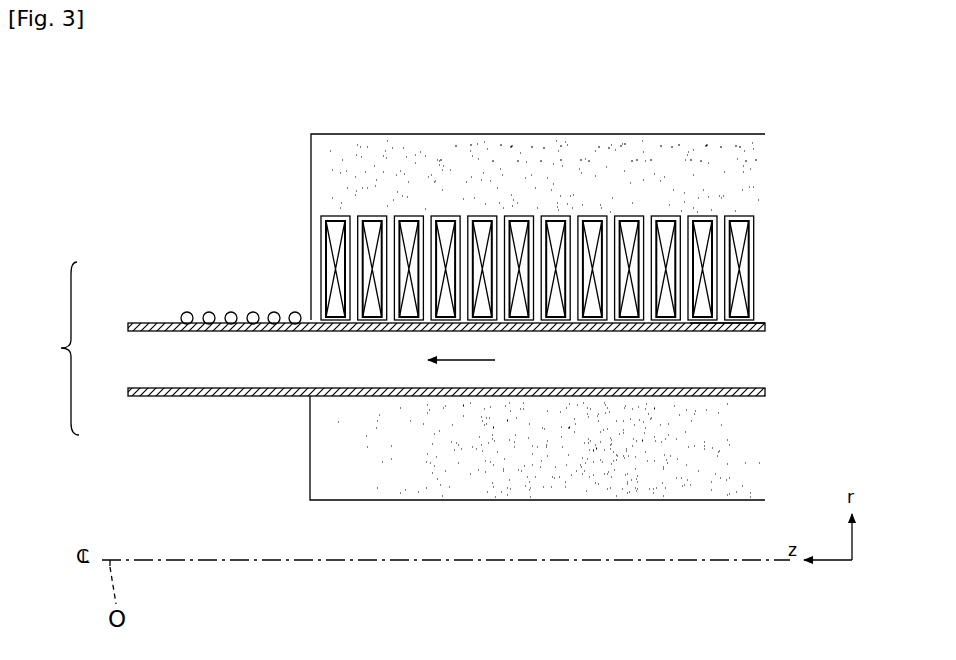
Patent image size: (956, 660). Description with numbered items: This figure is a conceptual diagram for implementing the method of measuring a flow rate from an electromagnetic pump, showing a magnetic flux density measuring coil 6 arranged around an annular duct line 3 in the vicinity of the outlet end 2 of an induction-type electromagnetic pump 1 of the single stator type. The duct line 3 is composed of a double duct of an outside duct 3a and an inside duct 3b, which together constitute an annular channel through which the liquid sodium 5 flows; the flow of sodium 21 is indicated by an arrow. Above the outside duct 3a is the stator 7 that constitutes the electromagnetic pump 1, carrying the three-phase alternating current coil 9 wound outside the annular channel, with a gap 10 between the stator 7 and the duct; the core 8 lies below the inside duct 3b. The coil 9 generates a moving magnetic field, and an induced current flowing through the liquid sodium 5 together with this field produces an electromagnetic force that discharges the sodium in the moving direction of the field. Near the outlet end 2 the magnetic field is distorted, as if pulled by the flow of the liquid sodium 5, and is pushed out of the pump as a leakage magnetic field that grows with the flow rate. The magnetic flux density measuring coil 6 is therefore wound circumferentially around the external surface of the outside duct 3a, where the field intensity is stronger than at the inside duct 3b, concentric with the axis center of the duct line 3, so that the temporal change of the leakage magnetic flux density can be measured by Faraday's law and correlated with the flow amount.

The electromagnetic pump 1 is at (596, 121).
The outlet end 2 is at (301, 308).
The duct line 3 is at (403, 348).
The outside duct 3a is at (135, 325).
The inside duct 3b is at (133, 396).
The liquid sodium 5 is at (199, 367).
The magnetic flux density measuring coil 6 is at (295, 312).
The stator 7 is at (400, 155).
The core 8 is at (752, 442).
The coil 9 is at (742, 272).
The gap 10 is at (758, 322).
The flow of sodium 21 is at (465, 360).